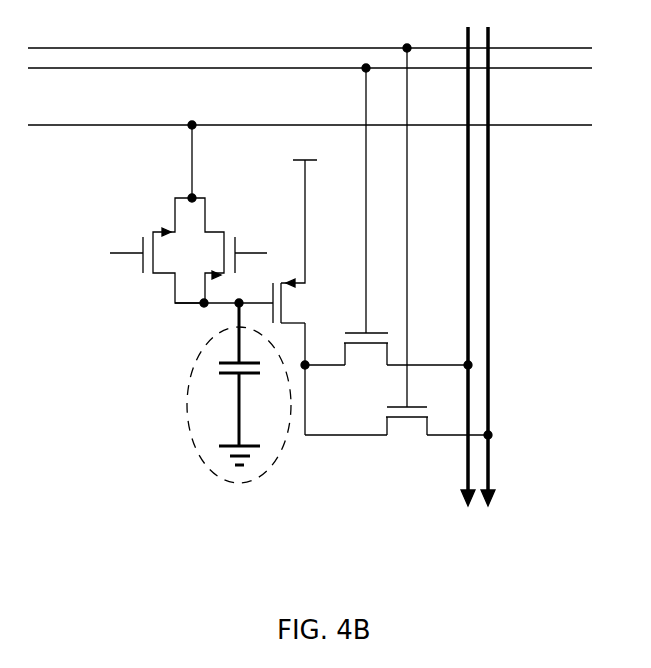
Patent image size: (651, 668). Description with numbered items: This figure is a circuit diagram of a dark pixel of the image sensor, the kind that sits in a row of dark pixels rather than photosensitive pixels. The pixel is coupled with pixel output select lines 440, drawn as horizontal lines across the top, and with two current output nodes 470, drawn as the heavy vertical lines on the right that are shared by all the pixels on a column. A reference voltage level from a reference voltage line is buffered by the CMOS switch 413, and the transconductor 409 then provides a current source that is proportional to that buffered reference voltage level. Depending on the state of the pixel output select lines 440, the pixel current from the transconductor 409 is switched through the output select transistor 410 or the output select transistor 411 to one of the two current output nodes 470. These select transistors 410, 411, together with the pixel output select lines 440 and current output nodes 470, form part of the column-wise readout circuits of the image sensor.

The pixel output select lines 440 is at (527, 60).
The current output nodes 470 is at (478, 260).
The CMOS switch 413 is at (155, 203).
The transconductor 409 is at (298, 305).
The output select transistor 410 is at (368, 350).
The output select transistor 411 is at (407, 420).